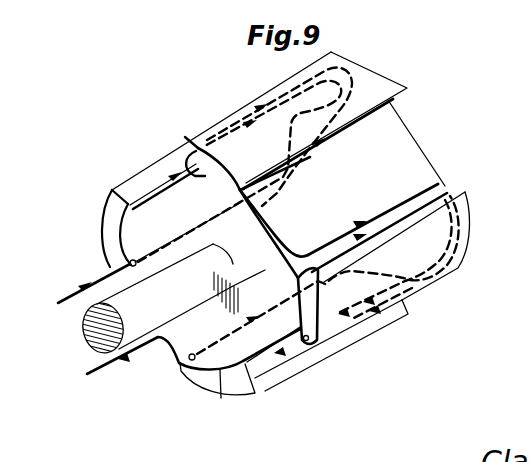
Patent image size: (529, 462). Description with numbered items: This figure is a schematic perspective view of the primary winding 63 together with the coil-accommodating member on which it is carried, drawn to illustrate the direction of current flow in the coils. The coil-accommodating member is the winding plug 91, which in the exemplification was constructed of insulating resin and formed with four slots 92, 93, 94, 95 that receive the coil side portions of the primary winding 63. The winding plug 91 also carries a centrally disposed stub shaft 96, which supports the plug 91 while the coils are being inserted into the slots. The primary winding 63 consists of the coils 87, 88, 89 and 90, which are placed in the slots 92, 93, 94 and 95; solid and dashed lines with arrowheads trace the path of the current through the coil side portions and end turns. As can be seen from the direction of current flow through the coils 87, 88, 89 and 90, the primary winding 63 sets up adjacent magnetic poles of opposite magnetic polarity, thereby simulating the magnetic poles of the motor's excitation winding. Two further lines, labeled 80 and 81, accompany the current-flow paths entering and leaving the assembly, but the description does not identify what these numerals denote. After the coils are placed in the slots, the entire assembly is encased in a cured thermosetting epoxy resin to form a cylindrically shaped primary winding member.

The primary winding 63 is at (337, 232).
The inlet flow line 80 is at (90, 284).
The return flow line 81 is at (113, 361).
The coil 87 is at (354, 124).
The coil 88 is at (397, 218).
The coil 89 is at (220, 398).
The coil 90 is at (103, 229).
The winding plug 91 is at (386, 66).
The slot 92 is at (421, 157).
The slot 93 is at (266, 369).
The slot 94 is at (178, 316).
The slot 95 is at (146, 181).
The stub shaft 96 is at (84, 310).